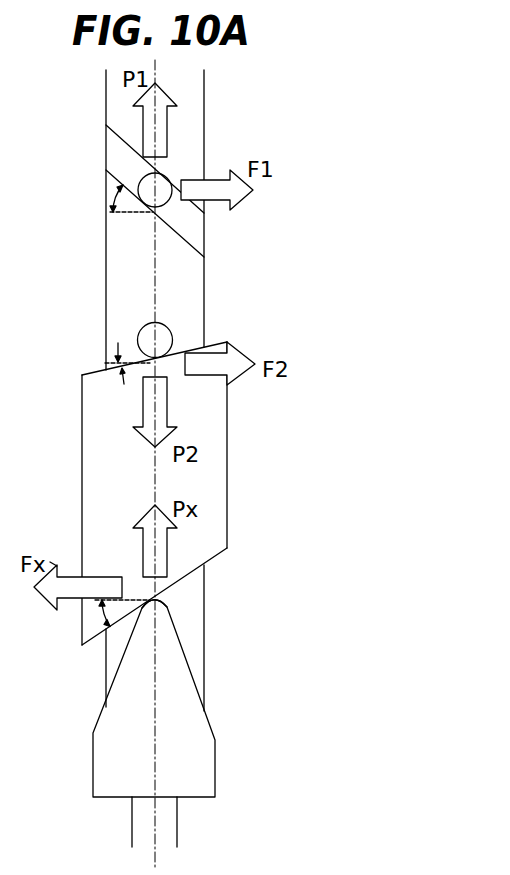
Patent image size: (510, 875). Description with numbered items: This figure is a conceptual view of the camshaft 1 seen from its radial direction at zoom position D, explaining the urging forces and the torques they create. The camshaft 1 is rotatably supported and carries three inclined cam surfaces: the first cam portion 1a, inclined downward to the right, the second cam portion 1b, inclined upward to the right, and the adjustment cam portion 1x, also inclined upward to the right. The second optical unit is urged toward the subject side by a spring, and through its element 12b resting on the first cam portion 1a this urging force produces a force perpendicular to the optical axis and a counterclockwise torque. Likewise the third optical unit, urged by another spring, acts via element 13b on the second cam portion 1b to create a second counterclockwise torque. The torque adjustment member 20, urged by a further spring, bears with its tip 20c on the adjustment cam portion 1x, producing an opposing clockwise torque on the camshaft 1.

The camshaft 1 is at (195, 122).
The first cam portion 1a is at (113, 148).
The second cam portion 1b is at (82, 375).
The adjustment cam portion 1x is at (218, 555).
The first ball 12b is at (145, 183).
The second ball 13b is at (145, 335).
The torque adjustment member 20 is at (205, 770).
The tip portion 20c is at (163, 612).